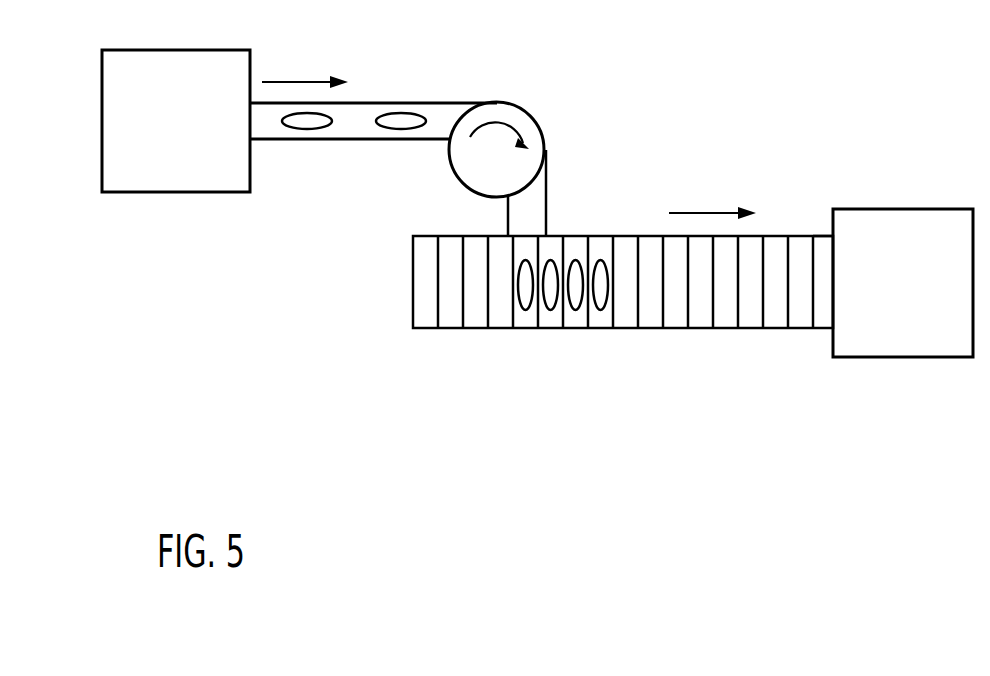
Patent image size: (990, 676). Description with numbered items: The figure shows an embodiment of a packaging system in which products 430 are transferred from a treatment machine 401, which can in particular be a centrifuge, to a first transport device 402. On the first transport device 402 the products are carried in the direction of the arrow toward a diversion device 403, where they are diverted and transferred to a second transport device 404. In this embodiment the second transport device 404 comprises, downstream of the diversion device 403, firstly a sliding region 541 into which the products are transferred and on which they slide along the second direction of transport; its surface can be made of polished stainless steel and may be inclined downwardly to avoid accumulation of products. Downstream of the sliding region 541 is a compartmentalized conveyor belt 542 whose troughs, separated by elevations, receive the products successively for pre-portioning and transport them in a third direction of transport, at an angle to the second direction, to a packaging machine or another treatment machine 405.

The treatment machine 401 is at (199, 135).
The first transport device 402 is at (350, 140).
The products 430 is at (297, 140).
The diversion device 403 is at (545, 126).
The sliding region 541 is at (548, 208).
The second transport device 404 is at (488, 350).
The compartmentalized conveyor belt 542 is at (803, 236).
The treatment machine 405 is at (924, 293).